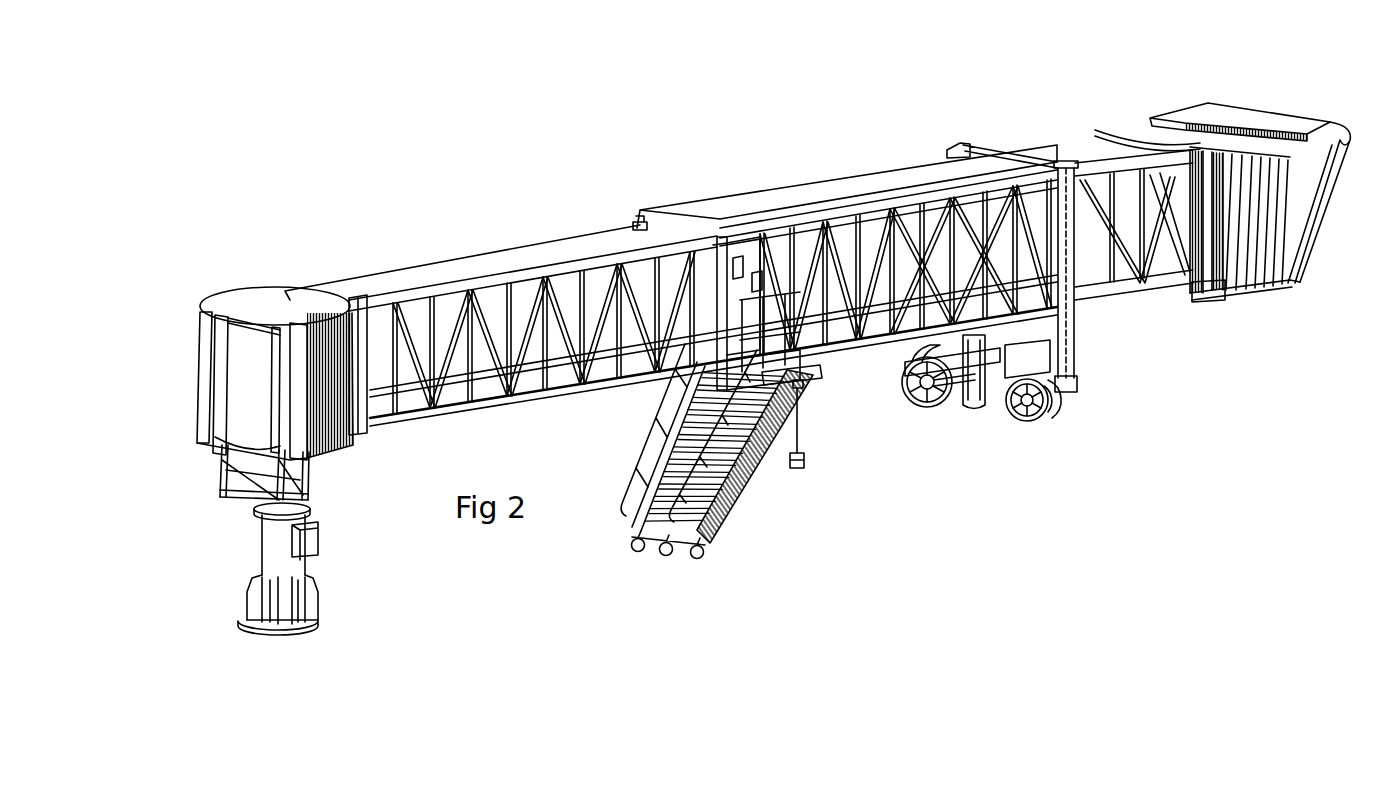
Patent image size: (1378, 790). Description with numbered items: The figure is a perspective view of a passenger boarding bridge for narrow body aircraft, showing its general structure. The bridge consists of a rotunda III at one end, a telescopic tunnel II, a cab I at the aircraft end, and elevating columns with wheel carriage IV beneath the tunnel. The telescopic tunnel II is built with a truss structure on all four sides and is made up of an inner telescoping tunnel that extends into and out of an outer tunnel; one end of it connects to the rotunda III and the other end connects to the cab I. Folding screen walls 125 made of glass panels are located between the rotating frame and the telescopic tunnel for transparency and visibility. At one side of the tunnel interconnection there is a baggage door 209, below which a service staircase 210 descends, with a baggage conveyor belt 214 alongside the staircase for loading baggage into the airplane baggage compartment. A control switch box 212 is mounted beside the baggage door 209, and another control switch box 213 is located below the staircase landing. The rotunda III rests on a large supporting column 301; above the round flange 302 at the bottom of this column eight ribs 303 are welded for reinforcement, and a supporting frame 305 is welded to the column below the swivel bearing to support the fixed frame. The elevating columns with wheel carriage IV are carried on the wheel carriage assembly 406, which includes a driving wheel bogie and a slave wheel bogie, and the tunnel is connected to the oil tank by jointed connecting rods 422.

The cab I is at (1167, 120).
The telescopic tunnel II is at (890, 173).
The rotunda III is at (280, 309).
The elevating columns with wheel carriage IV is at (1067, 327).
The folding screen walls 125 is at (1210, 293).
The baggage door 209 is at (723, 240).
The service staircase 210 is at (720, 487).
The control switch box 212 is at (748, 253).
The control switch box 213 is at (800, 463).
The baggage conveyor belt 214 is at (717, 517).
The large supporting column 301 is at (268, 557).
The round flange 302 is at (287, 627).
The ribs 303 is at (308, 602).
The supporting frame 305 is at (232, 483).
The wheel carriage assembly 406 is at (1067, 395).
The jointed connecting rods 422 is at (955, 396).